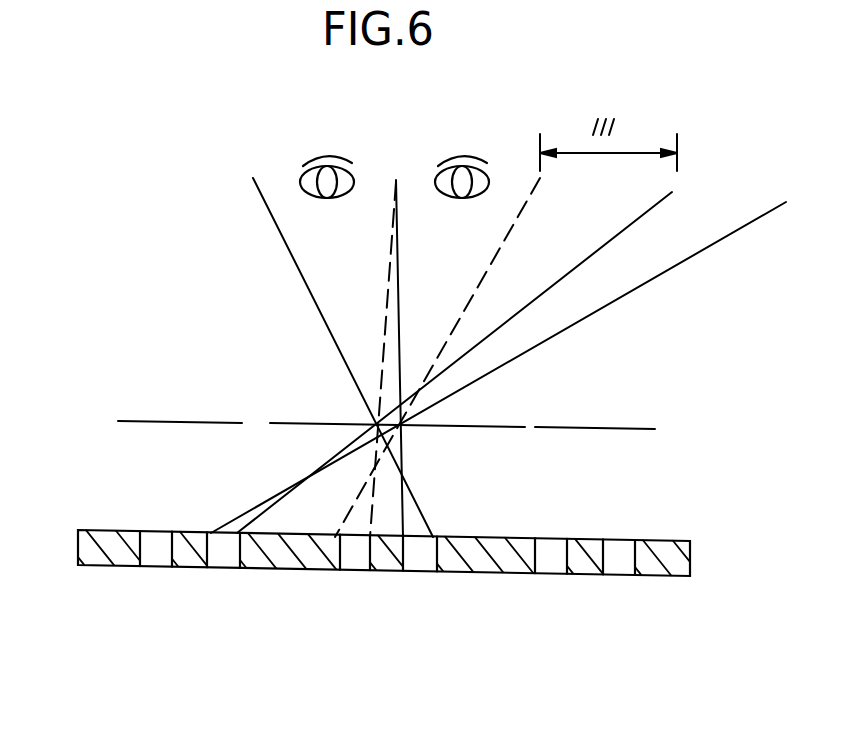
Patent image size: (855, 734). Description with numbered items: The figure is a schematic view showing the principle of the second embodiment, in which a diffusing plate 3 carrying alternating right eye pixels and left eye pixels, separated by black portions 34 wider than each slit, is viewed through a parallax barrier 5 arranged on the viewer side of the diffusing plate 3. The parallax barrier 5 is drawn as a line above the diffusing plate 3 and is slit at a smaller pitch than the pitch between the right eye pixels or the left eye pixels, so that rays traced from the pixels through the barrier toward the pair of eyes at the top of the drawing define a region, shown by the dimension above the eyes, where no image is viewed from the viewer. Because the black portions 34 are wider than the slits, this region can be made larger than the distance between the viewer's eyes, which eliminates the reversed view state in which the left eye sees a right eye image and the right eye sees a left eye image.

The diffusing plate 3 is at (675, 540).
The parallax barrier 5 is at (627, 428).
The black portions 34 is at (192, 560).